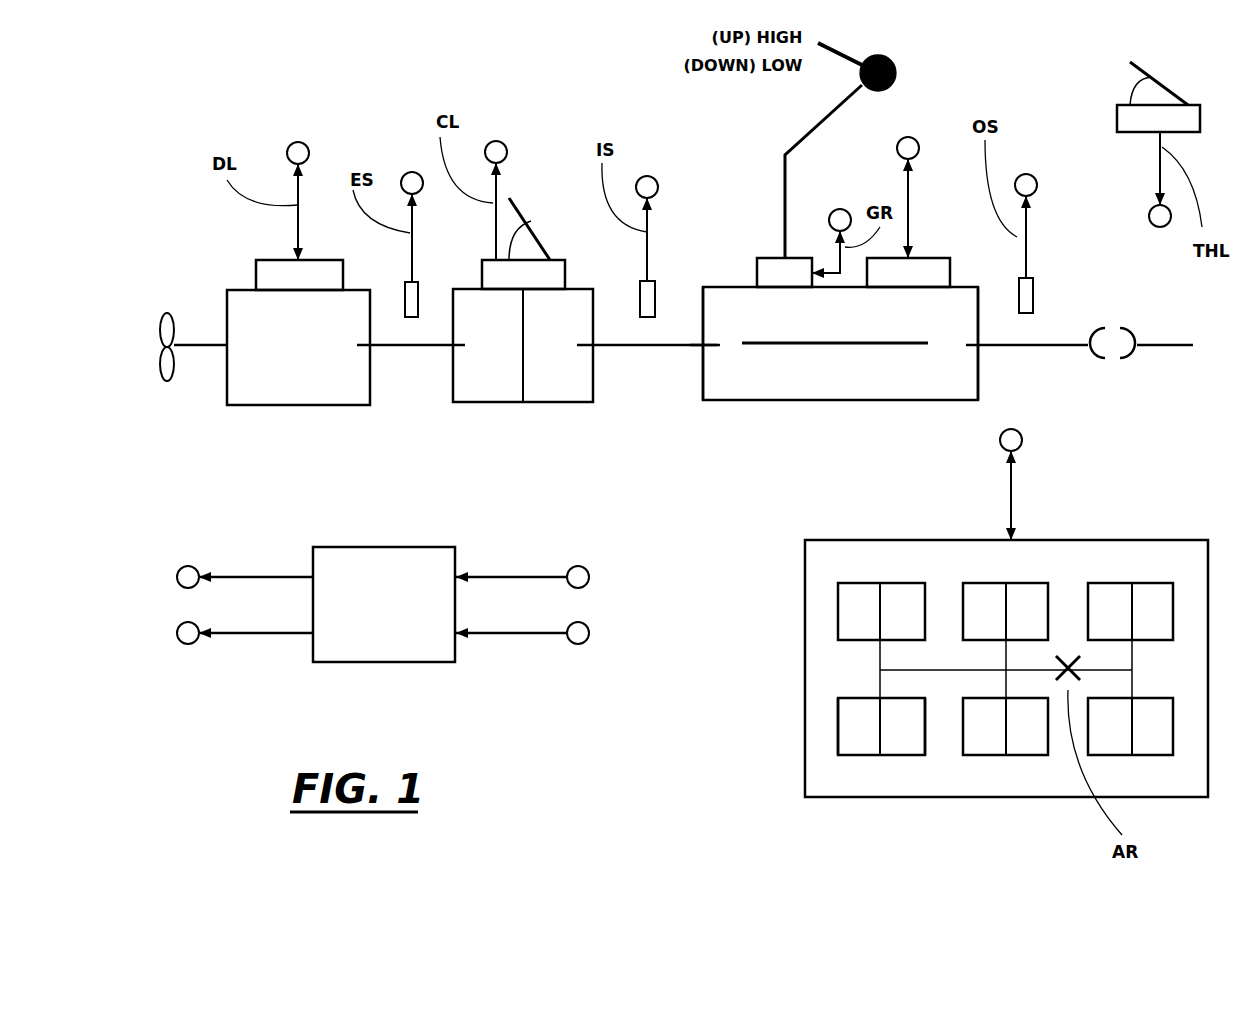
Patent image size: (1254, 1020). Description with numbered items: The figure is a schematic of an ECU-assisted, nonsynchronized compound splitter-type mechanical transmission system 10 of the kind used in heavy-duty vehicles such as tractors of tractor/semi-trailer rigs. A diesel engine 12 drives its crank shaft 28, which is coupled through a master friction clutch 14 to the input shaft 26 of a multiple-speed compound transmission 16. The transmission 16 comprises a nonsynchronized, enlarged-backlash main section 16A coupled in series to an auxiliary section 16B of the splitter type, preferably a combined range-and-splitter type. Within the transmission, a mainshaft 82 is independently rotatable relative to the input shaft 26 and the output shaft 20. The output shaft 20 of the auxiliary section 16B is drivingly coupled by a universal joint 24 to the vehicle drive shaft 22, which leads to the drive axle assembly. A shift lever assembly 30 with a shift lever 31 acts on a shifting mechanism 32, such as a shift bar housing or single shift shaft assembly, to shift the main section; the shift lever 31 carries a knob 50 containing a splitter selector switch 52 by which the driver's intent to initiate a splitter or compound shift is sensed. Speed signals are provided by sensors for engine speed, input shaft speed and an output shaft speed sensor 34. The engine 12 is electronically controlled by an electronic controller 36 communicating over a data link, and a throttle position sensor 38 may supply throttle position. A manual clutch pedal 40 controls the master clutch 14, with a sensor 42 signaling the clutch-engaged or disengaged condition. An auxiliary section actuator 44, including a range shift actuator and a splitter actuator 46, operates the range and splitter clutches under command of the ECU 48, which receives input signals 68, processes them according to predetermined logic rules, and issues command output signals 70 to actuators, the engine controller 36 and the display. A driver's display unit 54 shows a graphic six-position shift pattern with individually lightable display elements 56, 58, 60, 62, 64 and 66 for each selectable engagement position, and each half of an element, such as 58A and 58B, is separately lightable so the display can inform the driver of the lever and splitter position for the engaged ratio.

The vehicular transmission system 10 is at (697, 166).
The diesel engine 12 is at (298, 377).
The master friction clutch 14 is at (524, 422).
The multiple-speed compound transmission 16 is at (833, 365).
The main section 16A is at (772, 385).
The auxiliary section 16B is at (937, 385).
The output shaft 20 is at (1062, 338).
The vehicle drive shaft 22 is at (1167, 350).
The universal joint 24 is at (1113, 315).
The input shaft 26 is at (620, 347).
The crank shaft 28 is at (432, 348).
The shift lever assembly 30 is at (822, 185).
The shift lever 31 is at (785, 190).
The shifting mechanism 32 is at (650, 303).
The output shaft speed sensor 34 is at (990, 277).
The electronic controller 36 is at (283, 277).
The throttle position sensor 38 is at (1145, 118).
The manual clutch pedal 40 is at (527, 218).
The clutch sensor 42 is at (552, 275).
The auxiliary section actuator 44 is at (880, 277).
The splitter actuator 46 is at (923, 278).
The ECU 48 is at (370, 640).
The knob 50 is at (898, 73).
The splitter selector switch 52 is at (853, 45).
The driver's display unit 54 is at (1118, 504).
The display element 56 is at (860, 583).
The display element 58 is at (872, 757).
The display element half 58A is at (860, 745).
The display element half 58B is at (898, 750).
The display element 60 is at (1027, 583).
The display element 62 is at (998, 757).
The display element 64 is at (1150, 583).
The display element 66 is at (1130, 757).
The input signals 68 is at (510, 666).
The command output signals 70 is at (242, 654).
The mainshaft 82 is at (853, 345).